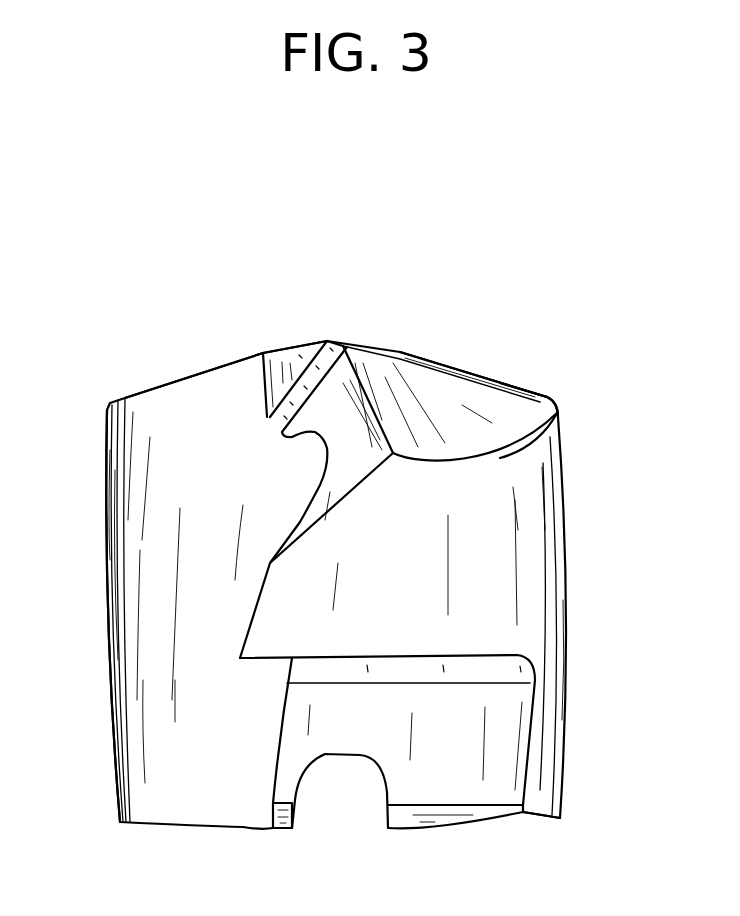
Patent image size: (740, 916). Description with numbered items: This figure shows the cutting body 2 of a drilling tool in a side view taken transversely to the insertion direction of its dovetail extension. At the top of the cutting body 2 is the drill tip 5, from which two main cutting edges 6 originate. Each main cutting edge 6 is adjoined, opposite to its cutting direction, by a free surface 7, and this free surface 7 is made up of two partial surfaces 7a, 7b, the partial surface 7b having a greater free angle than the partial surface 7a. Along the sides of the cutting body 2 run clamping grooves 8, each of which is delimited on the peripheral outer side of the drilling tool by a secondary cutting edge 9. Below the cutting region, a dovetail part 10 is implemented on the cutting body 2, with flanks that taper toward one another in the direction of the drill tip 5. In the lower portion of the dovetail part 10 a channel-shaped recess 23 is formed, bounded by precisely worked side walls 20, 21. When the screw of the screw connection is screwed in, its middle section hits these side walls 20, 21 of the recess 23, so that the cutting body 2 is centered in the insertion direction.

The cutting body 2 is at (584, 580).
The drill tip 5 is at (343, 320).
The main cutting edge 6 is at (197, 379).
The free surface 7 is at (522, 424).
The partial surface 7a is at (540, 402).
The partial surface 7b is at (528, 437).
The clamping groove 8 is at (150, 755).
The secondary cutting edge 9 is at (107, 597).
The dovetail part 10 is at (515, 755).
The side wall 20 is at (293, 829).
The side wall 21 is at (384, 820).
The channel-shaped recess 23 is at (347, 812).